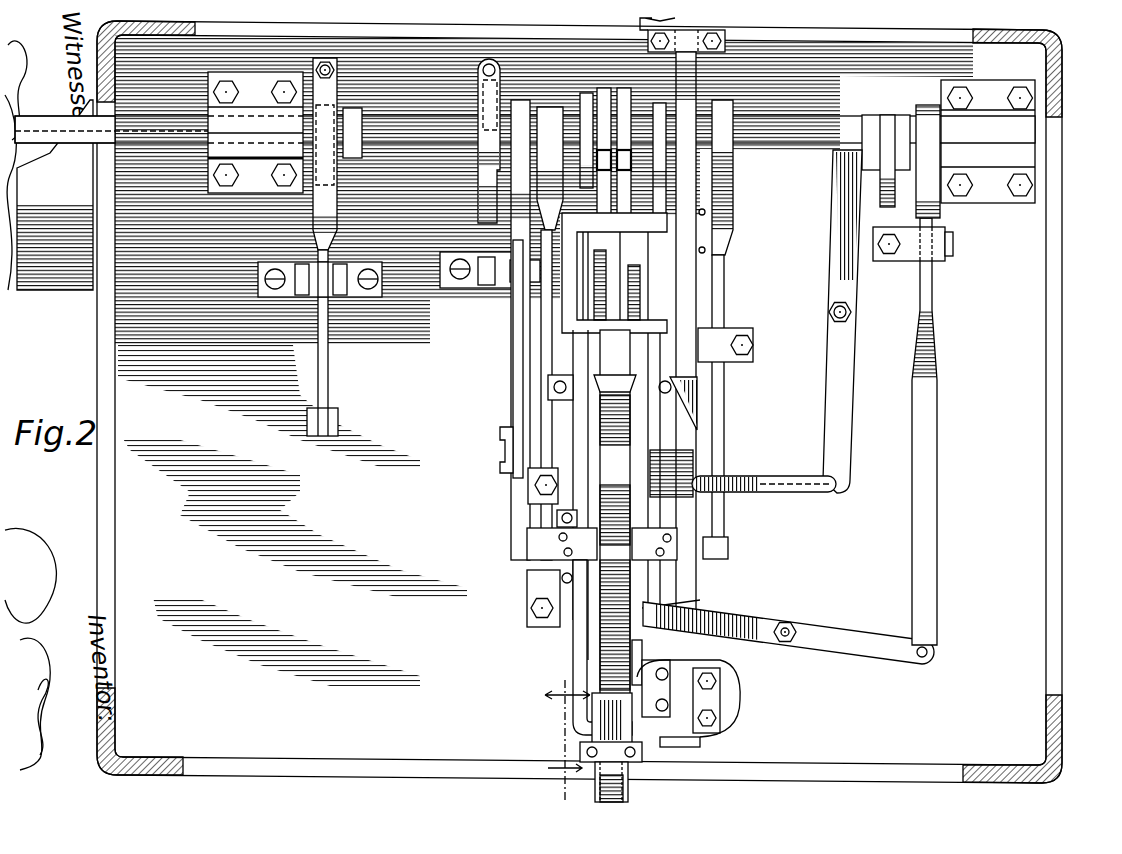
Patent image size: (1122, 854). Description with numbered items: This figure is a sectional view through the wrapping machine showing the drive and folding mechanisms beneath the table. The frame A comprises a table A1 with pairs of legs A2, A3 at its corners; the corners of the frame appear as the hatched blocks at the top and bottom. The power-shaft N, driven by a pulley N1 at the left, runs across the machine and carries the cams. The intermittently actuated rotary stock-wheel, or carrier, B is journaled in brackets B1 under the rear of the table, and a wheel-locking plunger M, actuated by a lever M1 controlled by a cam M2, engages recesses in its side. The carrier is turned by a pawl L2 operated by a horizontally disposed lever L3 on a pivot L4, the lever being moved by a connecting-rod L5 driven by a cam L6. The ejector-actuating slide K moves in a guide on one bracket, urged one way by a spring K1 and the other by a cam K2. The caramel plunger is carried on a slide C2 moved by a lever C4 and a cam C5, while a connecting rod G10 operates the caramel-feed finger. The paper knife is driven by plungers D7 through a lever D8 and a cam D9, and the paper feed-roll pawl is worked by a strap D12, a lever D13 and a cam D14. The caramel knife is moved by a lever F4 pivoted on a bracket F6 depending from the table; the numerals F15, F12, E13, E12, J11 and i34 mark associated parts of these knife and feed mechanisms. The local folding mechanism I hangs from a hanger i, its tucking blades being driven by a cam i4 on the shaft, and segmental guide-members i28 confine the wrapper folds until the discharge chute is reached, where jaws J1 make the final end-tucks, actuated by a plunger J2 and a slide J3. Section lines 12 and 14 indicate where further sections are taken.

The frame A is at (552, 402).
The table A1 is at (544, 360).
The legs A2 is at (110, 45).
The legs A3 is at (112, 733).
The power-shaft N is at (168, 143).
The pulley N1 is at (55, 195).
The bearing bracket F15 is at (338, 110).
The lever F4 is at (340, 342).
The bracket F6 is at (296, 300).
The lever end block F12 is at (330, 425).
The lever arm E13 is at (478, 105).
The guide block E12 is at (470, 225).
The cam D14 is at (520, 100).
The lever D13 is at (512, 357).
The strap D12 is at (500, 470).
The cam D9 is at (548, 107).
The lever D8 is at (540, 408).
The plungers D7 is at (532, 490).
The bar J11 is at (586, 93).
The cam i4 is at (624, 100).
The rod i34 is at (648, 96).
The cam K2 is at (660, 120).
The hanger i is at (690, 231).
The cam C5 is at (733, 190).
The lever C4 is at (724, 390).
The slide C2 is at (728, 548).
The ejector-actuating slide K is at (700, 345).
The connecting rod G10 is at (700, 300).
The folding mechanism I is at (570, 275).
The rotary stock-wheel B is at (605, 630).
The spring K1 is at (632, 660).
The brackets B1 is at (527, 548).
The slide J3 is at (575, 480).
The plunger J2 is at (580, 748).
The jaws J1 is at (622, 760).
The section line 14 is at (562, 746).
The section line 12 is at (567, 699).
The pawl L2 is at (722, 735).
The segmental guide-members i28 is at (700, 600).
The lever L3 is at (838, 632).
The pivot L4 is at (786, 644).
The connecting-rod L5 is at (937, 542).
The cam L6 is at (926, 106).
The cam M2 is at (862, 192).
The lever M1 is at (850, 345).
The wheel-locking plunger M is at (790, 484).